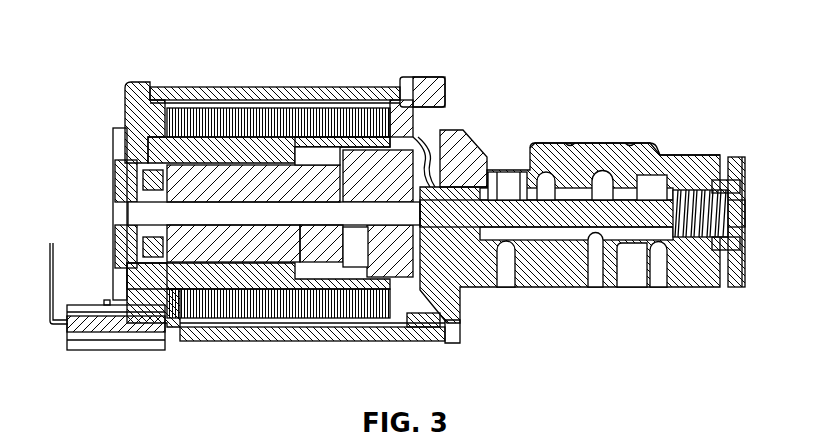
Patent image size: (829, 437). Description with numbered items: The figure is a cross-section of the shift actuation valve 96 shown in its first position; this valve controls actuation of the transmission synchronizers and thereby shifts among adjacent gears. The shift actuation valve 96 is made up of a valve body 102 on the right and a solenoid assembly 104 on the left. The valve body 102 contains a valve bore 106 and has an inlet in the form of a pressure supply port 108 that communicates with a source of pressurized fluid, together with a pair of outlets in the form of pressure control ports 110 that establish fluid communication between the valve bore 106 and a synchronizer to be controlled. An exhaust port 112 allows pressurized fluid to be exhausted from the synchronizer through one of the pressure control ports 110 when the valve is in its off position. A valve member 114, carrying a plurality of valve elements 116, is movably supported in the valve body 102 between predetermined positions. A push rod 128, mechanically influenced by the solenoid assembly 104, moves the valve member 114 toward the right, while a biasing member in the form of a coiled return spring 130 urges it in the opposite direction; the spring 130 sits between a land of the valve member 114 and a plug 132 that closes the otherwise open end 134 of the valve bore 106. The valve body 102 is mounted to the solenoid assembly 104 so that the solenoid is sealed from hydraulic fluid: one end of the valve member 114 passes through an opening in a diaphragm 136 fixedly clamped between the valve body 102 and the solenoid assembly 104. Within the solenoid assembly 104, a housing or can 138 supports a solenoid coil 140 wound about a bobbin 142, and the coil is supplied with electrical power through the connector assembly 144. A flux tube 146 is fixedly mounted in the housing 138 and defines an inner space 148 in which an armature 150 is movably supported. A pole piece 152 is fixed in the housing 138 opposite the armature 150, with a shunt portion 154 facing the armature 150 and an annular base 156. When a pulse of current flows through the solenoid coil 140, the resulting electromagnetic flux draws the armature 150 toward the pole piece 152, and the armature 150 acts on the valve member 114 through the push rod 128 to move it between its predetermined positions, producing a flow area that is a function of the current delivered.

The shift actuation valve 96 is at (605, 82).
The valve body 102 is at (655, 130).
The solenoid assembly 104 is at (105, 102).
The valve bore 106 is at (618, 240).
The pressure supply port 108 is at (595, 278).
The pressure control port 110 is at (517, 285).
The exhaust port 112 is at (497, 170).
The valve member 114 is at (597, 212).
The valve elements 116 is at (655, 186).
The push rod 128 is at (425, 108).
The coiled return spring 130 is at (697, 185).
The plug 132 is at (742, 198).
The open end 134 is at (745, 228).
The diaphragm 136 is at (460, 157).
The housing 138 is at (306, 90).
The solenoid coil 140 is at (230, 123).
The bobbin 142 is at (349, 140).
The connector assembly 144 is at (40, 262).
The flux tube 146 is at (183, 158).
The inner space 148 is at (232, 254).
The armature 150 is at (307, 252).
The pole piece 152 is at (335, 193).
The shunt portion 154 is at (357, 270).
The annular base 156 is at (437, 330).